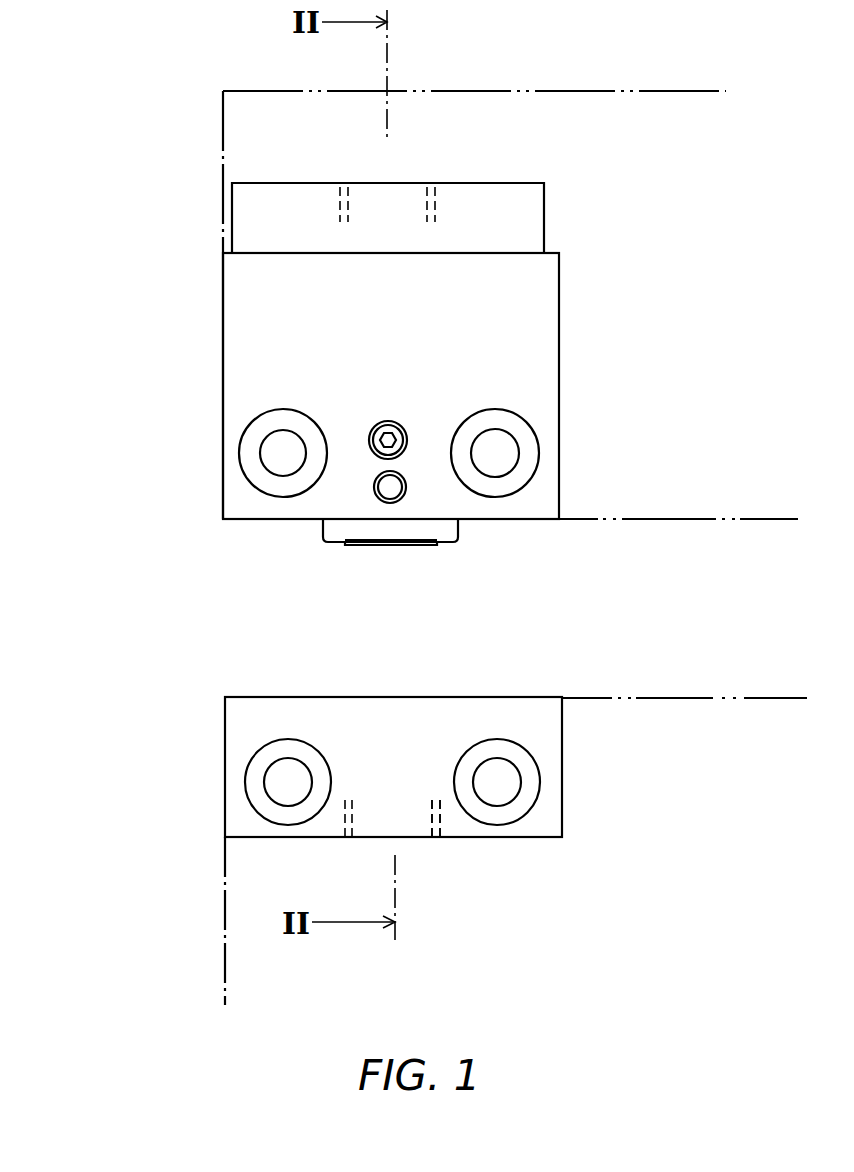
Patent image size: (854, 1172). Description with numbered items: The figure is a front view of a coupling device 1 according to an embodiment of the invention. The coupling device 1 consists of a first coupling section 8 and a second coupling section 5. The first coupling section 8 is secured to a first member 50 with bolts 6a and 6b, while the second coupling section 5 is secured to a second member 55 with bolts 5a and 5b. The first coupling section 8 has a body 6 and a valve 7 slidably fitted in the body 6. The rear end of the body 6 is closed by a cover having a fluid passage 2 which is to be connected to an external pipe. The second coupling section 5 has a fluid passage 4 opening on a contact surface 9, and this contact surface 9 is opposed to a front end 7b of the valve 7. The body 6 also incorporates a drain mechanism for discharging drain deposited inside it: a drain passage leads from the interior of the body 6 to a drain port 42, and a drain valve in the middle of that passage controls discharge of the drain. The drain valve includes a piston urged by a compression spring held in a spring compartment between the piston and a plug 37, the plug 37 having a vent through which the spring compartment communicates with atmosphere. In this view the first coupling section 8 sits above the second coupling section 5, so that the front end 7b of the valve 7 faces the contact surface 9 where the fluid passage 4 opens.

The coupling device 1 is at (175, 571).
The fluid passage 2 is at (418, 195).
The fluid passage 4 is at (430, 815).
The second coupling section 5 is at (247, 712).
The bolt 5a is at (268, 766).
The bolt 5b is at (515, 768).
The body 6 is at (537, 302).
The bolt 6a is at (268, 448).
The bolt 6b is at (512, 448).
The valve 7 is at (474, 532).
The front end 7b is at (335, 546).
The first coupling section 8 is at (222, 313).
The contact surface 9 is at (485, 697).
The plug 37 is at (396, 432).
The drain port 42 is at (390, 487).
The first member 50 is at (235, 95).
The second member 55 is at (240, 903).